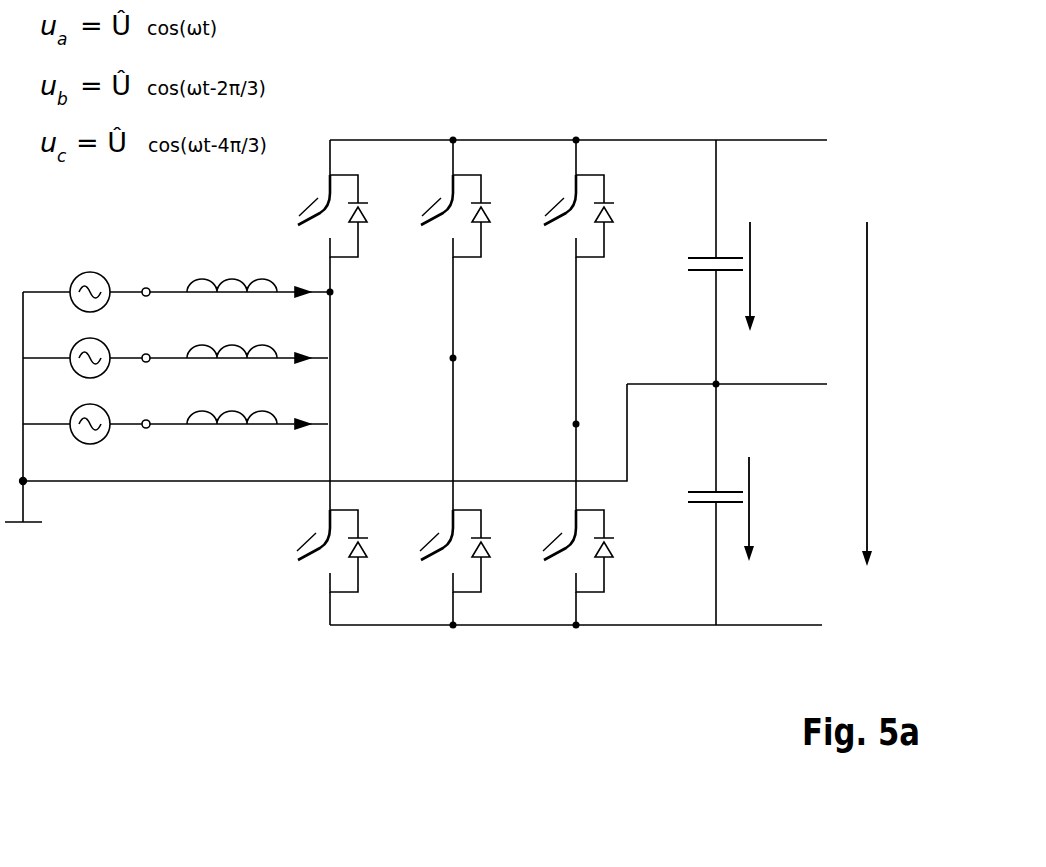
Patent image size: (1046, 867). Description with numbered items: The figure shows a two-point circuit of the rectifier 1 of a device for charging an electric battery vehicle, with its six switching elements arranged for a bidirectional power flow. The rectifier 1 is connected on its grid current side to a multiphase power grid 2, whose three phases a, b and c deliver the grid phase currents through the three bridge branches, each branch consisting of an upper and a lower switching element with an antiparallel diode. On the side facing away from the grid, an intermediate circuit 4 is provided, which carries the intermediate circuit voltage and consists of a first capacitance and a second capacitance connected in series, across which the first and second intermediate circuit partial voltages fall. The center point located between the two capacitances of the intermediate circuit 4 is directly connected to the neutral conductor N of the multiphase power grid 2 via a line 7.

The rectifier 1 is at (462, 651).
The multiphase power grid 2 is at (67, 552).
The intermediate circuit 4 is at (728, 124).
The line 7 is at (240, 481).